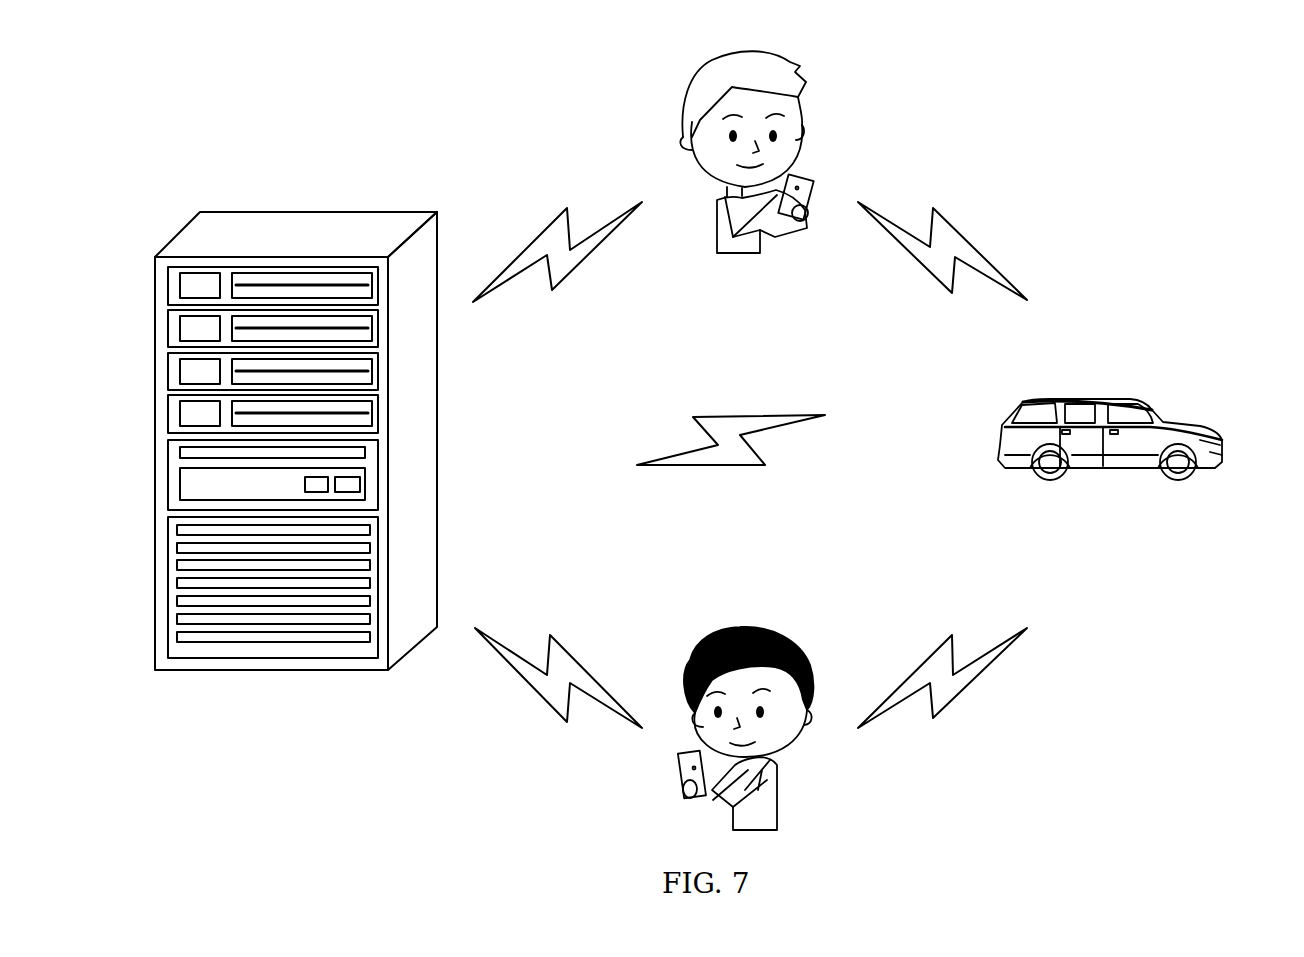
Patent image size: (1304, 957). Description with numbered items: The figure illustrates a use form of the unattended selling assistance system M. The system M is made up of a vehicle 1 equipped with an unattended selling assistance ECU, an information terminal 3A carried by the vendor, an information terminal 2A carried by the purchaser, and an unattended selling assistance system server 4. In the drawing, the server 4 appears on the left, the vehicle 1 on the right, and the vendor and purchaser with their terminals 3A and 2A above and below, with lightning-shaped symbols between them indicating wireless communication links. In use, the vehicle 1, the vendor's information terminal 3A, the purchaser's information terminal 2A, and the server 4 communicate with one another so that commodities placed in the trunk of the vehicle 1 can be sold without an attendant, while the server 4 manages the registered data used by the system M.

The vehicle 1 is at (1150, 408).
The information terminal 2A is at (793, 177).
The information terminal 3A is at (693, 752).
The unattended selling assistance system server 4 is at (300, 211).
The unattended selling assistance system M is at (1233, 330).